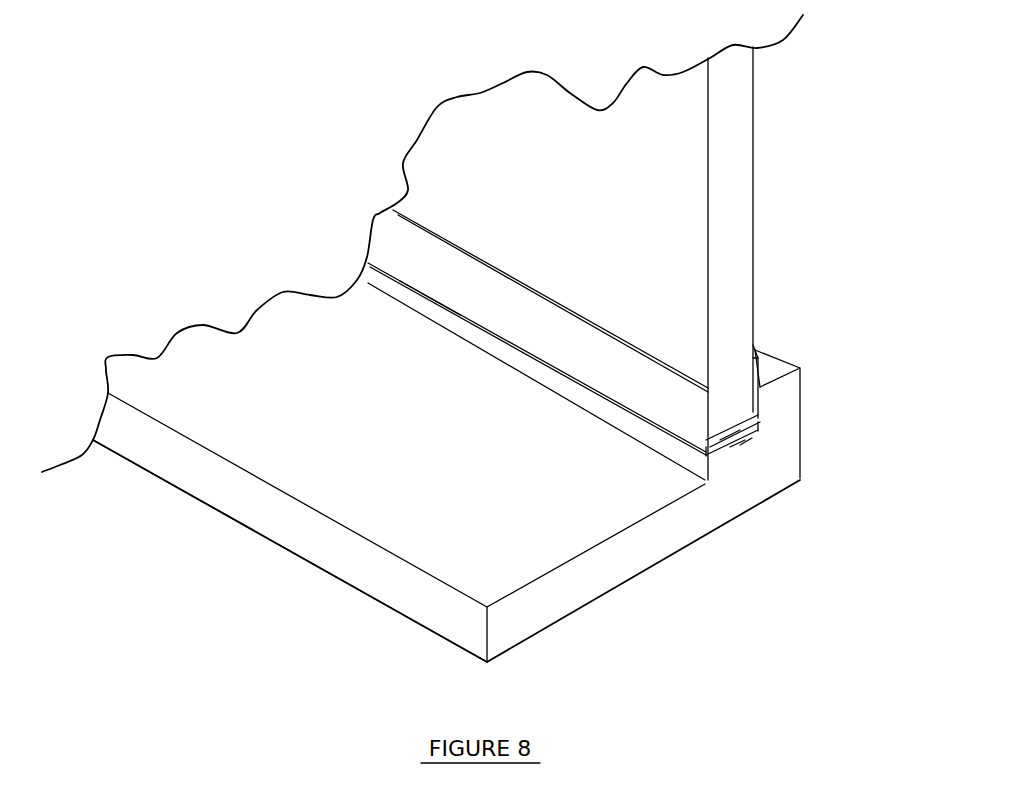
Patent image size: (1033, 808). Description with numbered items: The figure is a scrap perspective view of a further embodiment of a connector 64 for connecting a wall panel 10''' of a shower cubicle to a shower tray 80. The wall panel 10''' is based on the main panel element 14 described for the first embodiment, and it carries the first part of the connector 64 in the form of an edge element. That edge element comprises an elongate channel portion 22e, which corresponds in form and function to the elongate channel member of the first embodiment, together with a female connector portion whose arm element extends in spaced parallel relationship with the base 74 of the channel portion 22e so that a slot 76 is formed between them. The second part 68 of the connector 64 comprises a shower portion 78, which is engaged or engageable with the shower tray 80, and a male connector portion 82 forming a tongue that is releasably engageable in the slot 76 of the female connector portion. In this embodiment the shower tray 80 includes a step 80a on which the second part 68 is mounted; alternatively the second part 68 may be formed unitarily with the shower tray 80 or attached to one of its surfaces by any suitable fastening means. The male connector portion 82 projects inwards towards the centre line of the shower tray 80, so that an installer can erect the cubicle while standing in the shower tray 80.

The main panel element 14 is at (723, 143).
The wall panel 10''' is at (778, 303).
The elongate channel portion 22e is at (712, 392).
The step 80a is at (440, 327).
The shower tray 80 is at (800, 380).
The base 74 is at (747, 432).
The slot 76 is at (757, 415).
The shower portion 78 is at (760, 437).
The connector 64 is at (753, 435).
The second part 68 is at (760, 445).
The male connector portion 82 is at (695, 465).